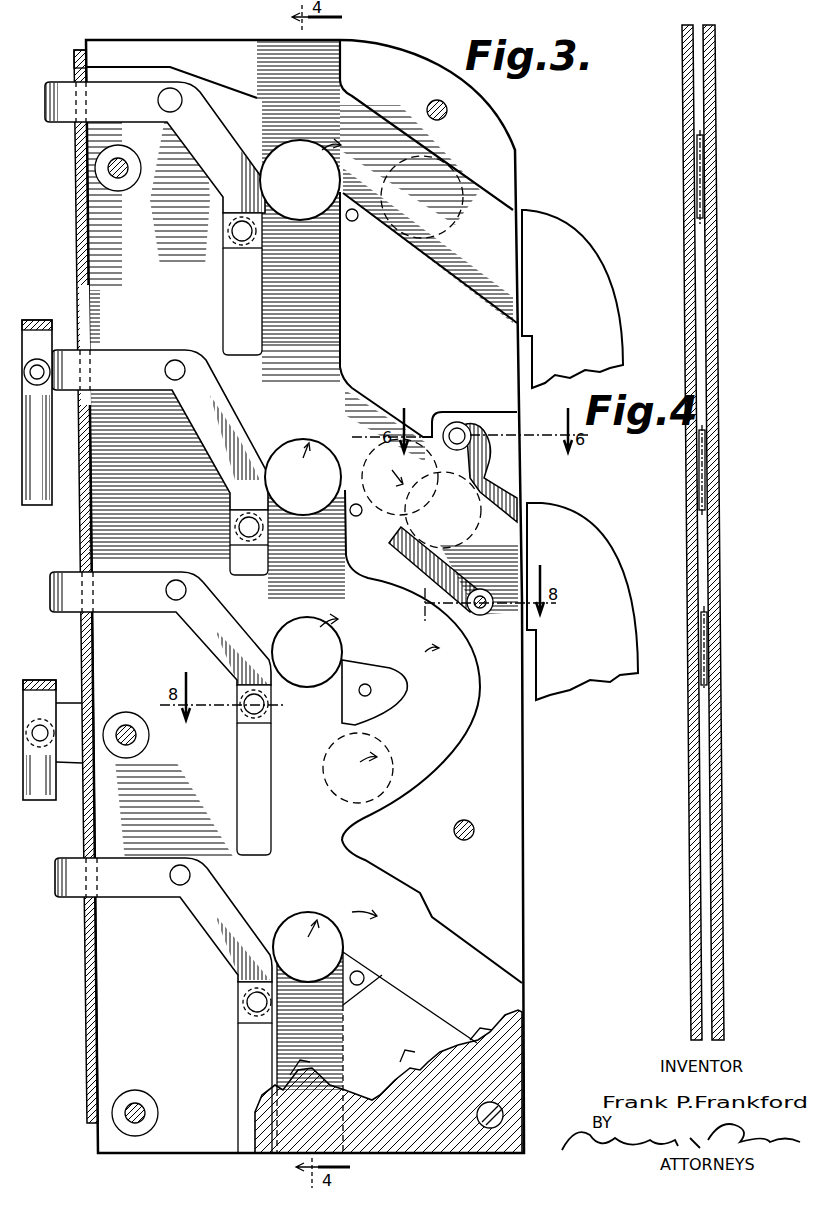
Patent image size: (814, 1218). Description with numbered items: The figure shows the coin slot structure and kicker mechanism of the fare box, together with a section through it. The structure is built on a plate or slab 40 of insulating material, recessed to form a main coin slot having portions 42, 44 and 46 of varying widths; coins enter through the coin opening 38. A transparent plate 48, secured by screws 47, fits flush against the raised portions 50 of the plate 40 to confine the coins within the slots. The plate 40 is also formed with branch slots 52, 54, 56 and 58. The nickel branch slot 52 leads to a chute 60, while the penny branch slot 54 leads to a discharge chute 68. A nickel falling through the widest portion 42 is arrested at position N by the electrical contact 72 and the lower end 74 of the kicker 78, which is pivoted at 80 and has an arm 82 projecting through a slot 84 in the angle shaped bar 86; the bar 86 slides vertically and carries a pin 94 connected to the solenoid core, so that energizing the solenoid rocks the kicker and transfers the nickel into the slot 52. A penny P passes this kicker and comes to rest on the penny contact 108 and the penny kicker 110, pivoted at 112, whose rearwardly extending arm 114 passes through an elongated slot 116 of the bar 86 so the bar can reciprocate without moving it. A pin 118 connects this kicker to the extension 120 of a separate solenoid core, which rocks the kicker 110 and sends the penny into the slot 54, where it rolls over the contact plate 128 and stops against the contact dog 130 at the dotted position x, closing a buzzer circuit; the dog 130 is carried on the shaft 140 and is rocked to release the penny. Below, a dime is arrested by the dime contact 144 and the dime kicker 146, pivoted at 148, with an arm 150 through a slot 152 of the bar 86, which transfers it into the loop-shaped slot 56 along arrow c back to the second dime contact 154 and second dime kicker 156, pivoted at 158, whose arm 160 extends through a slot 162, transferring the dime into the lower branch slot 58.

In FIG. 3, the coin opening 38 is at (324, 50).
In FIG. 3, the plate or slab 40 is at (425, 58).
In FIG. 4, the plate or slab 40 is at (712, 345).
In FIG. 3, the main slot portion 42 is at (340, 262).
In FIG. 4, the main slot portion 42 is at (704, 232).
In FIG. 3, the main slot portion 44 is at (333, 505).
In FIG. 4, the main slot portion 44 is at (706, 519).
In FIG. 3, the main slot portion 46 is at (310, 903).
In FIG. 4, the main slot portion 46 is at (709, 723).
In FIG. 3, the screws 47 is at (122, 180).
In FIG. 3, the transparent plate 48 is at (428, 1150).
In FIG. 4, the transparent plate 48 is at (692, 790).
In FIG. 3, the raised portions 50 is at (518, 138).
In FIG. 3, the nickel branch slot 52 is at (521, 218).
In FIG. 3, the penny branch slot 54 is at (370, 430).
In FIG. 3, the loop-shaped branch slot 56 is at (370, 708).
In FIG. 3, the lower branch slot 58 is at (462, 1000).
In FIG. 3, the chute 60 is at (597, 272).
In FIG. 3, the discharge chute 68 is at (612, 562).
In FIG. 3, the electrical contact 72 is at (345, 225).
In FIG. 3, the lower end of kicker 74 is at (241, 182).
In FIG. 3, the kicker 78 is at (218, 136).
In FIG. 3, the pivot 80 is at (170, 112).
In FIG. 3, the arm 82 is at (54, 122).
In FIG. 3, the slot 84 is at (76, 70).
In FIG. 3, the angle shaped bar 86 is at (76, 235).
In FIG. 3, the pin 94 is at (38, 800).
In FIG. 3, the penny contact 108 is at (357, 518).
In FIG. 3, the penny kicker 110 is at (237, 448).
In FIG. 3, the pivot 112 is at (178, 358).
In FIG. 3, the rearwardly extending arm 114 is at (122, 352).
In FIG. 3, the elongated slot 116 is at (79, 306).
In FIG. 3, the pin 118 is at (42, 380).
In FIG. 3, the extension 120 is at (38, 505).
In FIG. 3, the contact plate 128 is at (420, 552).
In FIG. 3, the contact dog 130 is at (518, 443).
In FIG. 3, the shaft 140 is at (460, 424).
In FIG. 3, the dime contact 144 is at (398, 700).
In FIG. 3, the dime kicker 146 is at (240, 632).
In FIG. 3, the pivot 148 is at (175, 604).
In FIG. 3, the arm 150 is at (65, 614).
In FIG. 3, the slot 152 is at (86, 566).
In FIG. 3, the dime contact 154 is at (368, 968).
In FIG. 3, the second dime kicker 156 is at (228, 945).
In FIG. 3, the pivot 158 is at (178, 890).
In FIG. 3, the arm 160 is at (65, 900).
In FIG. 3, the slot 162 is at (96, 858).
In FIG. 4, the nickel position N is at (702, 172).
In FIG. 4, the penny P is at (702, 458).
In FIG. 4, the D position D is at (706, 650).
In FIG. 3, the penny position x is at (450, 512).
In FIG. 3, the arrow c is at (311, 838).